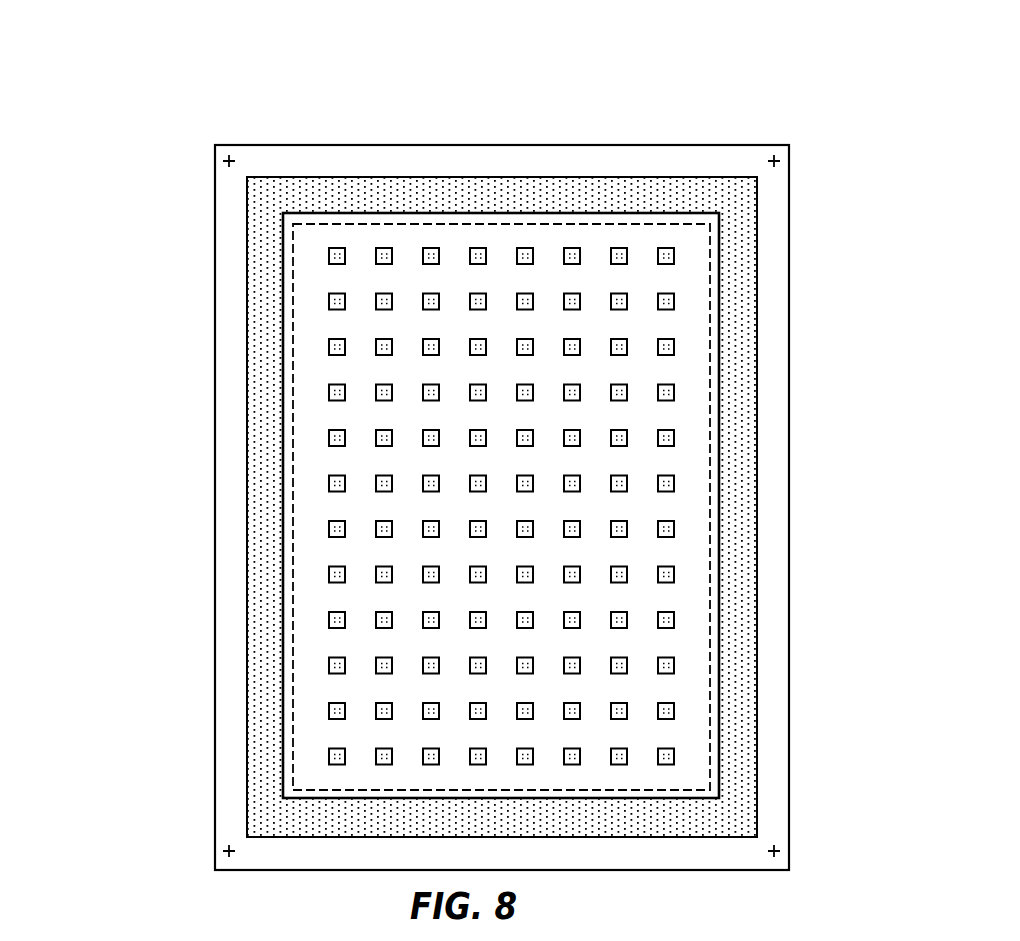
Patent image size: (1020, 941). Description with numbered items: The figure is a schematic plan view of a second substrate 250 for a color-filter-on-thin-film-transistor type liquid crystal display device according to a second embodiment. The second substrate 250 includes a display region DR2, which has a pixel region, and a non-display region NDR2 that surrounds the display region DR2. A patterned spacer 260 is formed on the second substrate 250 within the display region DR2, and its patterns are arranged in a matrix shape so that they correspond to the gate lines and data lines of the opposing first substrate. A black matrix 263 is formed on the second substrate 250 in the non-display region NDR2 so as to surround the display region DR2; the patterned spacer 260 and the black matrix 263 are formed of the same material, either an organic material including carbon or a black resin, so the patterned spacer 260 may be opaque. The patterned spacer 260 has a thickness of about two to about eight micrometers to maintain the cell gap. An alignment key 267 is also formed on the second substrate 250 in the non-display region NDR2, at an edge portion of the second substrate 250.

The second substrate 250 is at (678, 126).
The patterned spacer 260 is at (327, 395).
The black matrix 263 is at (740, 588).
The alignment key 267 is at (233, 144).
The non-display region NDR2 is at (225, 449).
The display region DR2 is at (310, 552).